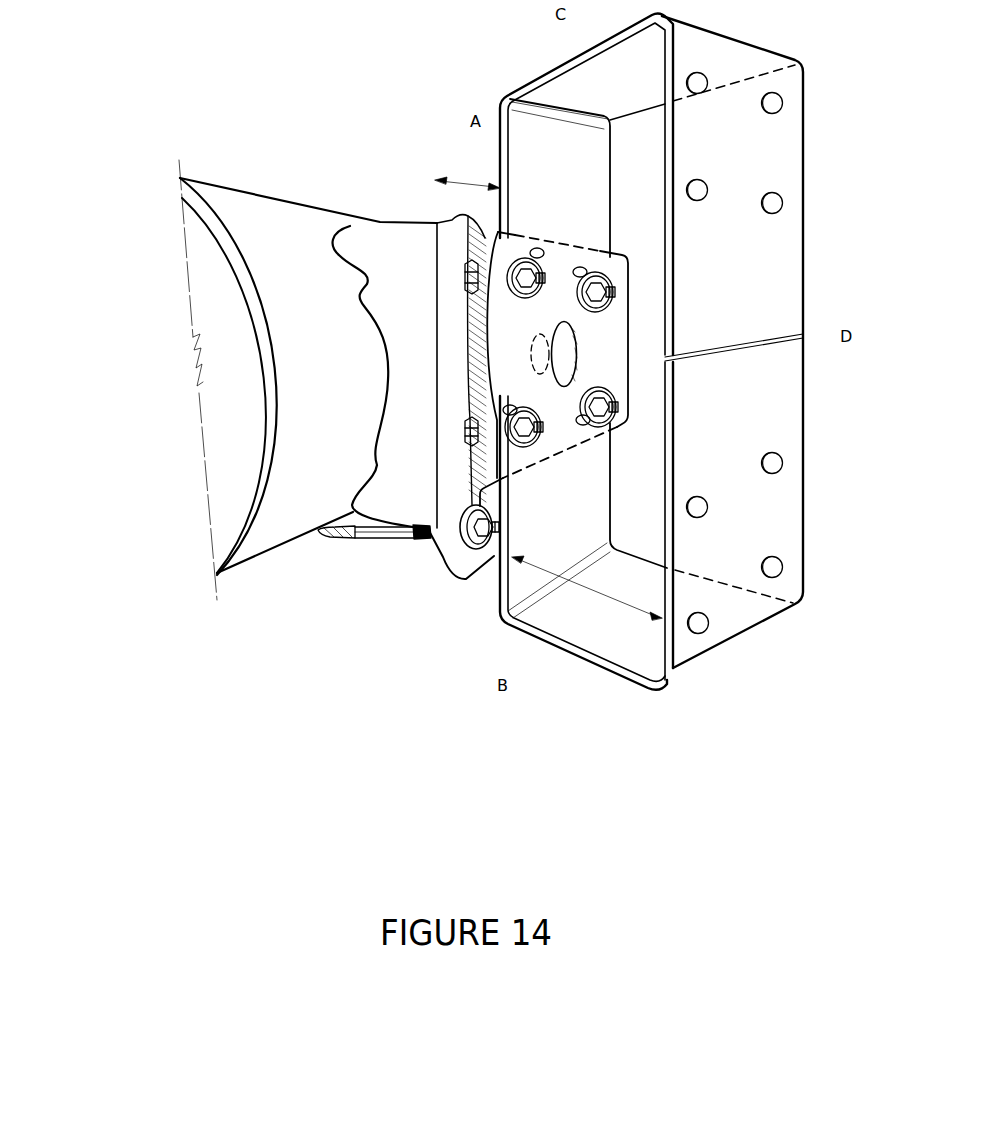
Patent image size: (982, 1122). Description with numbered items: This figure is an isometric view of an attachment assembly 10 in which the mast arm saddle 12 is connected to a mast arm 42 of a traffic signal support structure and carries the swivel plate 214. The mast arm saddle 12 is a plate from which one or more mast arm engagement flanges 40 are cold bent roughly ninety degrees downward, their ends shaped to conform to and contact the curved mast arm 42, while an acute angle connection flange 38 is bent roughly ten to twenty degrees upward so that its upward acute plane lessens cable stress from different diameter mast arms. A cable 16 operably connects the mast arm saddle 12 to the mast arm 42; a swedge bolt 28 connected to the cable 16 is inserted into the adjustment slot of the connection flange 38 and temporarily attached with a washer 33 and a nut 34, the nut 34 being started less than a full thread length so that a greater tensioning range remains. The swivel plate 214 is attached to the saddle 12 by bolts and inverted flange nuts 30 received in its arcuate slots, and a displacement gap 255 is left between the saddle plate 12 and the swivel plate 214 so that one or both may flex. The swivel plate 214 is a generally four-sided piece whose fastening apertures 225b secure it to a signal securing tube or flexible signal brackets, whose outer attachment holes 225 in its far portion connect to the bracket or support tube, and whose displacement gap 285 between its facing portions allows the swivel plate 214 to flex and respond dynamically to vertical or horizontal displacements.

The attachment assembly 10 is at (118, 312).
The mast arm saddle 12 is at (405, 183).
The cable 16 is at (335, 538).
The swedge bolt 28 is at (388, 538).
The inverted flange nut 30 is at (465, 431).
The washer 33 is at (466, 512).
The nut 34 is at (474, 522).
The acute angle connection flange 38 is at (452, 572).
The mast arm engagement flange 40 is at (388, 381).
The mast arm 42 is at (272, 428).
The swivel plate 214 is at (623, 397).
The outer attachment hole 225 is at (705, 632).
The fastening aperture 225b is at (700, 194).
The displacement gap 255 is at (467, 185).
The displacement gap 285 is at (588, 587).